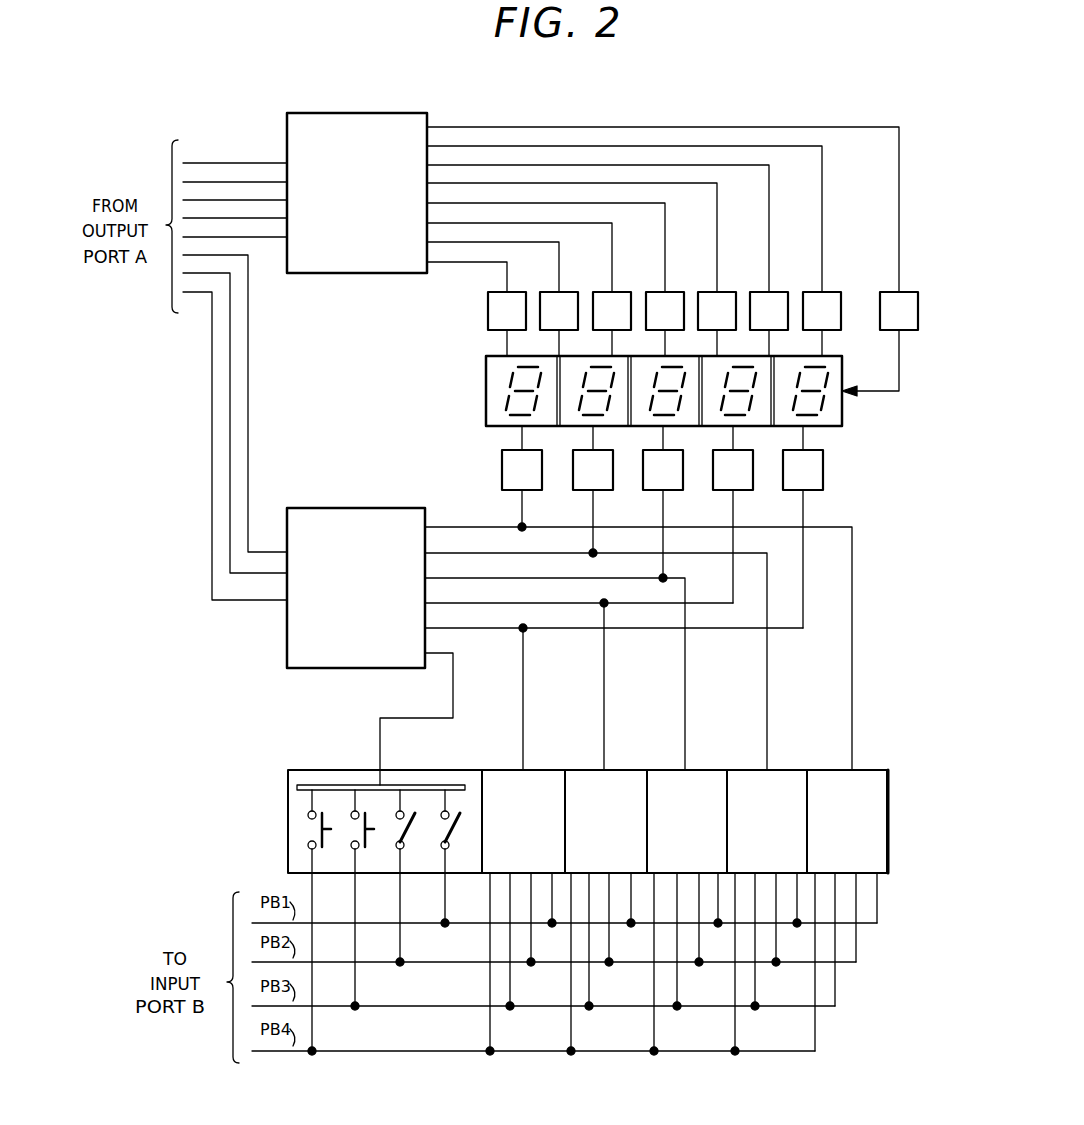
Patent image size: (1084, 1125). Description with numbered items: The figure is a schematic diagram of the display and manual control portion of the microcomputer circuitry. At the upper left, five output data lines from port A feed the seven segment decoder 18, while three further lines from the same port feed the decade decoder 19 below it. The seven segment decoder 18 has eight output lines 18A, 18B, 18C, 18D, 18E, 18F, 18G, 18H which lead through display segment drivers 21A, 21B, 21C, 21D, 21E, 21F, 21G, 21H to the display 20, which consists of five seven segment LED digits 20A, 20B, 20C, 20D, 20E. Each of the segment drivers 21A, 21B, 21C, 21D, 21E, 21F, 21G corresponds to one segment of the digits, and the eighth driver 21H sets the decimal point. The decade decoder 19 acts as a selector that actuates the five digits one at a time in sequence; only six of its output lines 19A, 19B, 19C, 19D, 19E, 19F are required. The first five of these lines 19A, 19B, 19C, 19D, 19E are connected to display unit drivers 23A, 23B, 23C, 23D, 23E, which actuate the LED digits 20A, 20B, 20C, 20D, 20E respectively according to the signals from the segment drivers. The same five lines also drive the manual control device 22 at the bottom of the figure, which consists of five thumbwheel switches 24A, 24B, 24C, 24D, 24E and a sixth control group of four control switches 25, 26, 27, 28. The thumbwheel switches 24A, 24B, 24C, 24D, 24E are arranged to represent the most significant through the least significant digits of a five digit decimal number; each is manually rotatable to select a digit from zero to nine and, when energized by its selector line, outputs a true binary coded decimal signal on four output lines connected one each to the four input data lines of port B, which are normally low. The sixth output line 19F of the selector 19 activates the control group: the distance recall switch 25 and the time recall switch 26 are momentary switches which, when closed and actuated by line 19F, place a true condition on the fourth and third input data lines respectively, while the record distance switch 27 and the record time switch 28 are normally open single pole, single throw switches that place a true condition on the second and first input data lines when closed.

The seven segment decoder 18 is at (369, 117).
The output line 18A is at (507, 279).
The output line 18B is at (559, 259).
The output line 18C is at (612, 240).
The output line 18D is at (665, 220).
The output line 18E is at (717, 202).
The output line 18F is at (769, 182).
The output line 18G is at (822, 164).
The output line 18H is at (899, 146).
The decade decoder 19 is at (358, 503).
The output line 19A is at (484, 524).
The output line 19B is at (495, 551).
The output line 19C is at (510, 577).
The output line 19D is at (515, 602).
The output line 19E is at (472, 628).
The sixth output line 19F is at (455, 701).
The display 20 is at (642, 404).
The seven segment LED digit 20A is at (486, 424).
The seven segment LED digit 20B is at (577, 424).
The seven segment LED digit 20C is at (649, 424).
The seven segment LED digit 20D is at (722, 424).
The seven segment LED digit 20E is at (833, 424).
The display segment driver 21A is at (507, 324).
The display segment driver 21B is at (559, 324).
The display segment driver 21C is at (612, 324).
The display segment driver 21D is at (665, 324).
The display segment driver 21E is at (717, 324).
The display segment driver 21F is at (769, 324).
The display segment driver 21G is at (822, 324).
The display segment driver 21H is at (880, 344).
The manual control device 22 is at (347, 912).
The display unit driver 23A is at (522, 476).
The display unit driver 23B is at (593, 489).
The display unit driver 23C is at (663, 502).
The display unit driver 23D is at (733, 514).
The display unit driver 23E is at (803, 527).
The thumbwheel switch 24A is at (530, 777).
The thumbwheel switch 24B is at (607, 777).
The thumbwheel switch 24C is at (700, 777).
The thumbwheel switch 24D is at (777, 777).
The thumbwheel switch 24E is at (862, 777).
The distance recall switch 25 is at (327, 822).
The time recall switch 26 is at (370, 822).
The record distance switch 27 is at (414, 818).
The record time switch 28 is at (459, 818).